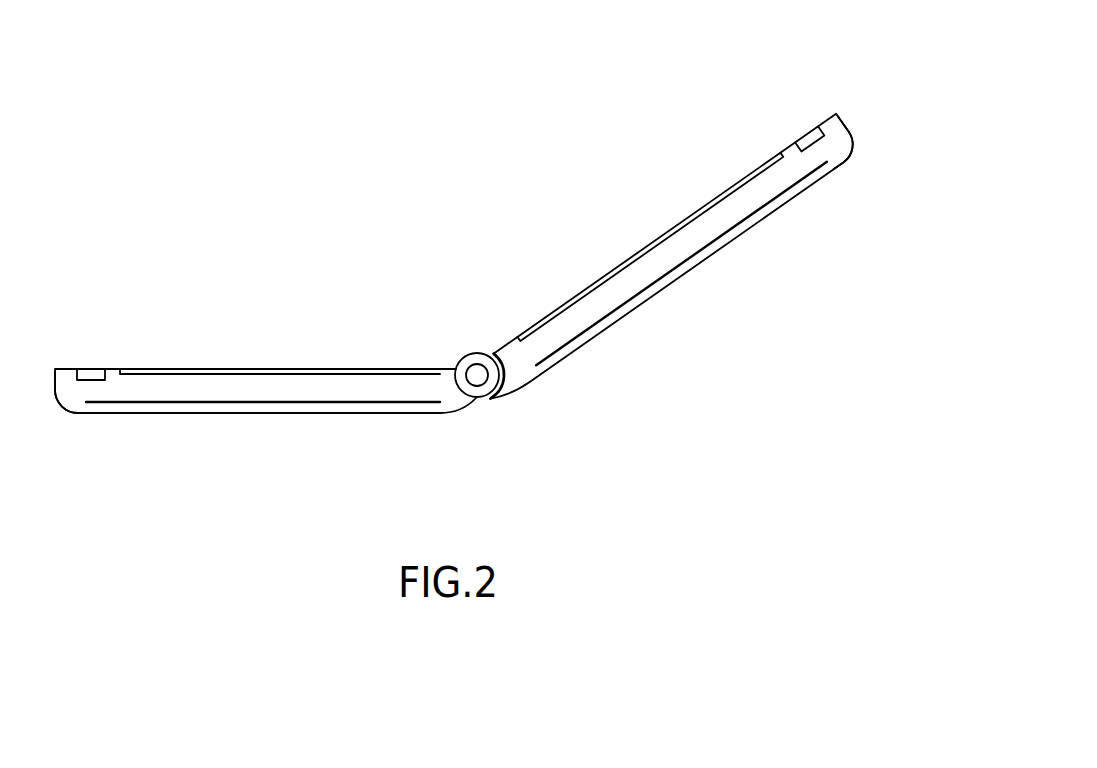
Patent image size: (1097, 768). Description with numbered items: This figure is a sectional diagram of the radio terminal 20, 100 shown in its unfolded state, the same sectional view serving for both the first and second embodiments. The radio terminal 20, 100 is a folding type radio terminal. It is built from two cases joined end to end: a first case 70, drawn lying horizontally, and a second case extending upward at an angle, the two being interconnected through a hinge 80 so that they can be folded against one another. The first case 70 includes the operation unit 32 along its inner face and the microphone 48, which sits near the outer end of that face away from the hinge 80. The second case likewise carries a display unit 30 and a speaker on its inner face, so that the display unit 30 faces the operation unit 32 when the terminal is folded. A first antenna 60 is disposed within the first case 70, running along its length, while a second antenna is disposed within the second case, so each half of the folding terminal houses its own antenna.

The radio terminal 20 is at (456, 243).
The radio terminal 100 is at (456, 243).
The display unit 30 is at (683, 245).
The operation unit 32 is at (245, 389).
The microphone 48 is at (90, 372).
The first antenna 60 is at (320, 402).
The first case 70 is at (68, 392).
The hinge 80 is at (477, 378).